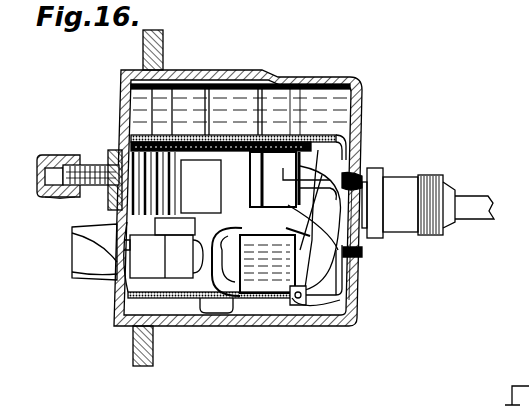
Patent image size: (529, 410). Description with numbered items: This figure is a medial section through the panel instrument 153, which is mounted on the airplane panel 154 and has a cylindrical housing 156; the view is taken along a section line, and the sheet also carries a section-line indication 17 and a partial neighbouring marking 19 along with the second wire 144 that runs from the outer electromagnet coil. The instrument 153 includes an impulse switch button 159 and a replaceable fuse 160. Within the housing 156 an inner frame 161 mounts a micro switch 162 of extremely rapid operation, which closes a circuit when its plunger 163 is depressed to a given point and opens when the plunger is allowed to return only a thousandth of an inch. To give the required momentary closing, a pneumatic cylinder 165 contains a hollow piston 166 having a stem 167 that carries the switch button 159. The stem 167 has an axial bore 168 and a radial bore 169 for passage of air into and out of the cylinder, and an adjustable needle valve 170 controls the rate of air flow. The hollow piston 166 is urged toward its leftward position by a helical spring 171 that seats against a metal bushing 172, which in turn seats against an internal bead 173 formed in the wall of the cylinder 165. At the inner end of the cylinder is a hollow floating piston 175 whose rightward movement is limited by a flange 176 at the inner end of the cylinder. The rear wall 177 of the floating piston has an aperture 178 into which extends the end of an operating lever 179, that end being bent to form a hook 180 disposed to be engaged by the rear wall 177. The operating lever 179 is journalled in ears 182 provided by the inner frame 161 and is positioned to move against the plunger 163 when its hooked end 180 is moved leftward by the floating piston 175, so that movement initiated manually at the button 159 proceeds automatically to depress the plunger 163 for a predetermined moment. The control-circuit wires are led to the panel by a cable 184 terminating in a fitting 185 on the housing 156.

The section line 17- 17 is at (335, 82).
The adjacent figure element 19 is at (517, 378).
The second wire 144 is at (248, 405).
The instrument 153 is at (108, 297).
The airplane panel 154 is at (139, 345).
The cylindrical housing 156 is at (358, 280).
The impulse switch button 159 is at (53, 153).
The replaceable fuse 160 is at (127, 323).
The inner frame 161 is at (330, 156).
The micro switch 162 is at (265, 272).
The plunger 163 is at (290, 303).
The pneumatic cylinder 165 is at (232, 138).
The hollow piston 166 is at (76, 268).
The stem 167 is at (88, 165).
The axial bore 168 is at (114, 150).
The radial bore 169 is at (99, 190).
The adjustable needle valve 170 is at (66, 197).
The helical spring 171 is at (176, 118).
The metal bushing 172 is at (205, 112).
The internal bead 173 is at (253, 95).
The hollow floating piston 175 is at (281, 130).
The flange 176 is at (322, 132).
The rear wall 177 is at (340, 166).
The aperture 178 is at (345, 180).
The operating lever 179 is at (362, 252).
The hook 180 is at (262, 187).
The ears 182 is at (312, 302).
The cable 184 is at (476, 204).
The fitting 185 is at (408, 184).